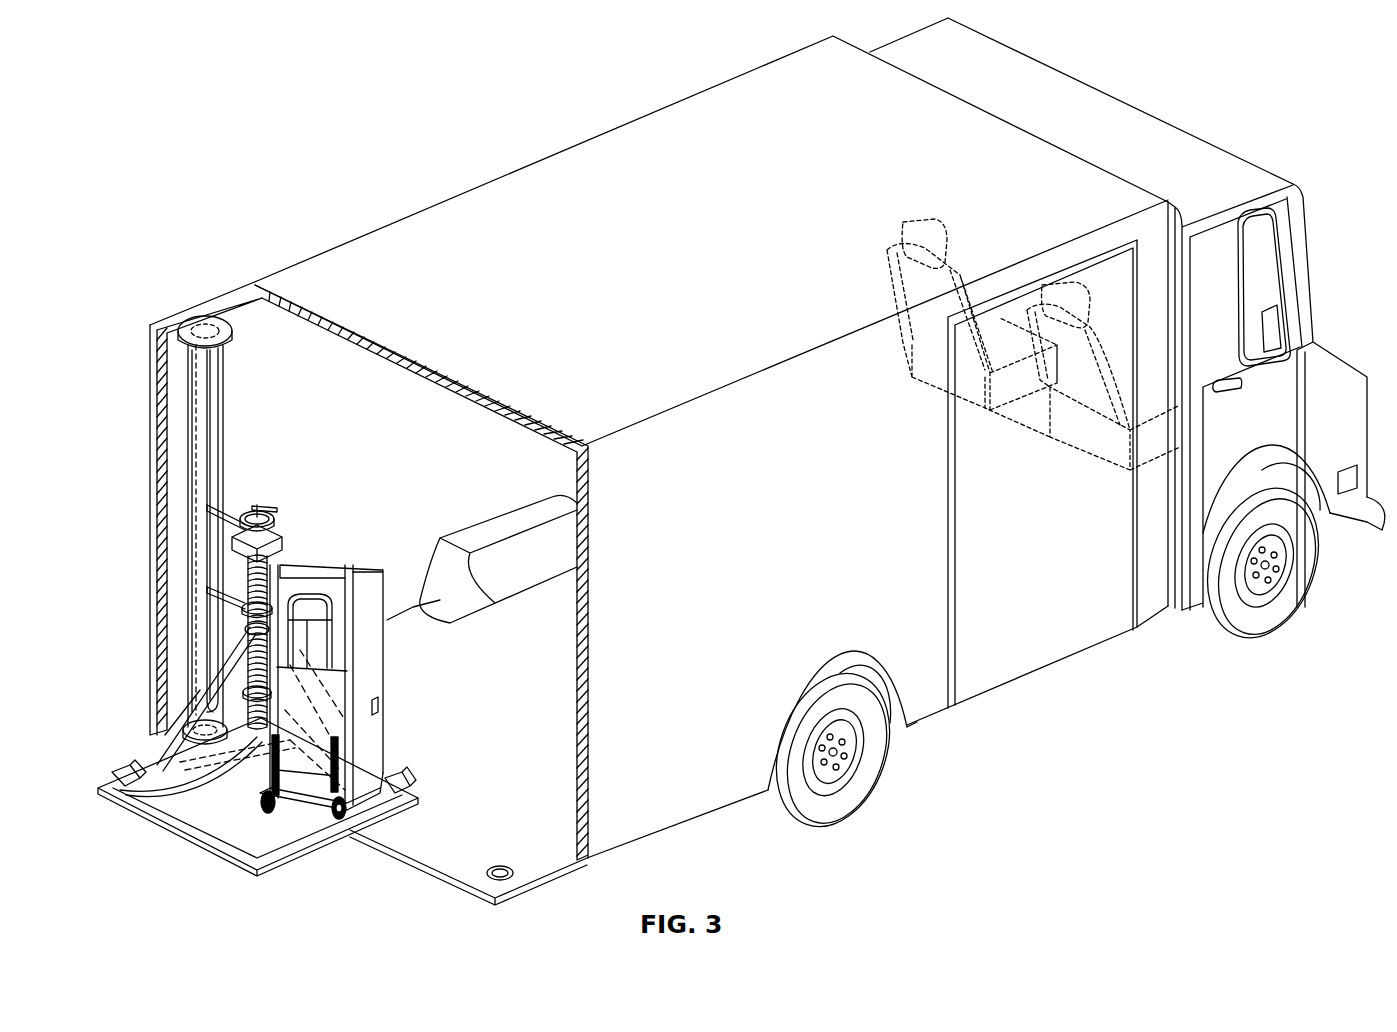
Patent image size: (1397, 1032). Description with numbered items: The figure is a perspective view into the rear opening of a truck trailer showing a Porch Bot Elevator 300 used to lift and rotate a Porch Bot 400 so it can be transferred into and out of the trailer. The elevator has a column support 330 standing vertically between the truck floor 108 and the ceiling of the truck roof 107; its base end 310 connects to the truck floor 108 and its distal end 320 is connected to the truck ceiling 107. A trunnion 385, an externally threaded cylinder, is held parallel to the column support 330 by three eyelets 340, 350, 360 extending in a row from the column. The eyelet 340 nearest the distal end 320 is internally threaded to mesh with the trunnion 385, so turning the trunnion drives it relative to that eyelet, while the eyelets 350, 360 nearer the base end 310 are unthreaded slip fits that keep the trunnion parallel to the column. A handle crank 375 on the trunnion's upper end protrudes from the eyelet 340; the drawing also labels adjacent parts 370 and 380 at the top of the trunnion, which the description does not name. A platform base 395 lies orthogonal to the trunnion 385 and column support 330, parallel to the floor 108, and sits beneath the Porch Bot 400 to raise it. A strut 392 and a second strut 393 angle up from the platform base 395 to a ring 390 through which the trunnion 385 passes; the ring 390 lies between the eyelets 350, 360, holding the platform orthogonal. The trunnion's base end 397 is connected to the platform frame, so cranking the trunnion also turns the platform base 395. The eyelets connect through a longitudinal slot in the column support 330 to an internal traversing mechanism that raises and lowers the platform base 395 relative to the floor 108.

The truck roof 107 is at (420, 378).
The truck floor 108 is at (557, 857).
The Porch Bot Elevator 300 is at (192, 202).
The base end 310 is at (183, 723).
The distal end 320 is at (192, 318).
The column support 330 is at (193, 408).
The eyelet 340 is at (232, 507).
The eyelet 350 is at (248, 578).
The eyelet 360 is at (247, 687).
The drive wheel 370 is at (278, 525).
The handle crank 375 is at (263, 512).
The drive nut 380 is at (282, 536).
The trunnion 385 is at (222, 592).
The ring 390 is at (243, 606).
The strut 392 is at (330, 712).
The second strut 393 is at (152, 764).
The platform base 395 is at (282, 860).
The base end 397 is at (132, 790).
The Porch Bot 400 is at (384, 660).